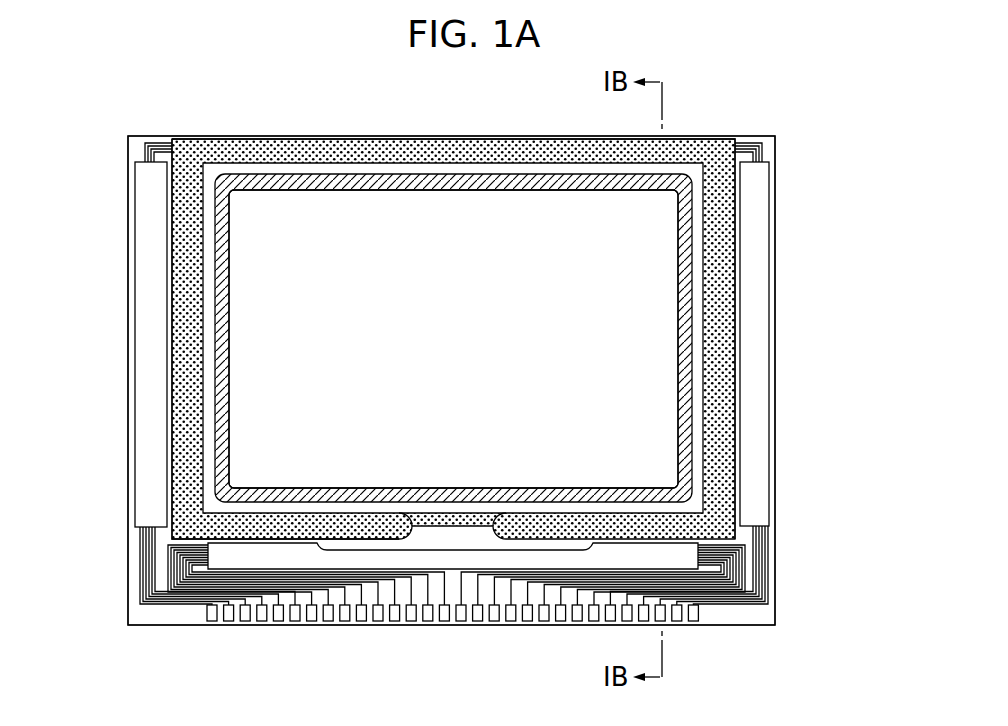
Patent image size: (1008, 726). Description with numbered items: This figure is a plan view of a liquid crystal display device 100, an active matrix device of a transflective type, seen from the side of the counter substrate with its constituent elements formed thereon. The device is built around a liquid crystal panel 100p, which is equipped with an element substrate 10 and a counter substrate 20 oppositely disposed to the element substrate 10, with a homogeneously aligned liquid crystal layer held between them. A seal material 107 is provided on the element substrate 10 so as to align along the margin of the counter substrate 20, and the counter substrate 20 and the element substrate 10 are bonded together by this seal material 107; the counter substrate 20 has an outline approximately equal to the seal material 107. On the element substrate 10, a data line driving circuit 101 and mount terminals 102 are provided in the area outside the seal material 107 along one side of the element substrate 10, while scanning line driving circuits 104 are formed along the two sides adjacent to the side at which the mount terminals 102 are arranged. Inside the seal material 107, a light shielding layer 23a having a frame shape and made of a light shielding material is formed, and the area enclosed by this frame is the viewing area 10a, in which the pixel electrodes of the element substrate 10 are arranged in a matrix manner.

The liquid crystal display device 100 is at (731, 106).
The liquid crystal panel 100p is at (843, 447).
The element substrate 10 is at (784, 472).
The viewing area 10a is at (272, 283).
The counter substrate 20 is at (750, 502).
The light shielding layer 23a is at (683, 256).
The scanning line driving circuits 104 is at (147, 352).
The seal material 107 is at (717, 330).
The data line driving circuit 101 is at (250, 562).
The mount terminals 102 is at (344, 614).